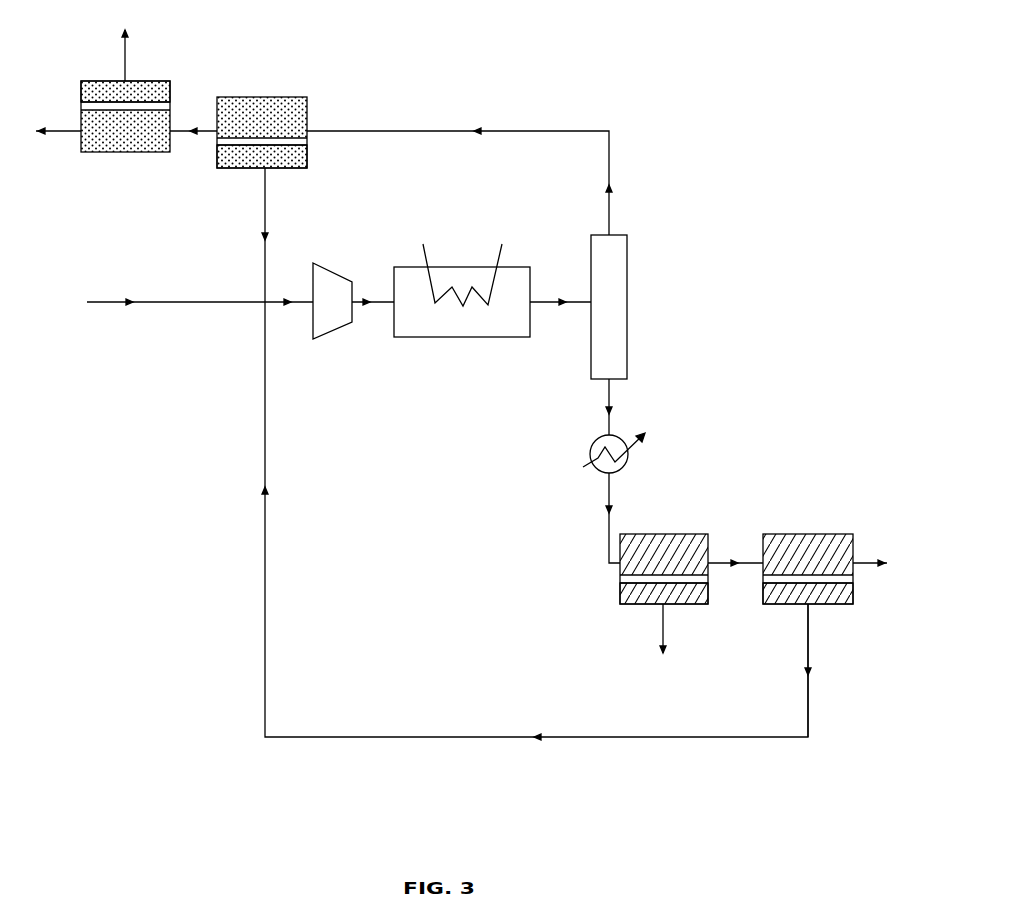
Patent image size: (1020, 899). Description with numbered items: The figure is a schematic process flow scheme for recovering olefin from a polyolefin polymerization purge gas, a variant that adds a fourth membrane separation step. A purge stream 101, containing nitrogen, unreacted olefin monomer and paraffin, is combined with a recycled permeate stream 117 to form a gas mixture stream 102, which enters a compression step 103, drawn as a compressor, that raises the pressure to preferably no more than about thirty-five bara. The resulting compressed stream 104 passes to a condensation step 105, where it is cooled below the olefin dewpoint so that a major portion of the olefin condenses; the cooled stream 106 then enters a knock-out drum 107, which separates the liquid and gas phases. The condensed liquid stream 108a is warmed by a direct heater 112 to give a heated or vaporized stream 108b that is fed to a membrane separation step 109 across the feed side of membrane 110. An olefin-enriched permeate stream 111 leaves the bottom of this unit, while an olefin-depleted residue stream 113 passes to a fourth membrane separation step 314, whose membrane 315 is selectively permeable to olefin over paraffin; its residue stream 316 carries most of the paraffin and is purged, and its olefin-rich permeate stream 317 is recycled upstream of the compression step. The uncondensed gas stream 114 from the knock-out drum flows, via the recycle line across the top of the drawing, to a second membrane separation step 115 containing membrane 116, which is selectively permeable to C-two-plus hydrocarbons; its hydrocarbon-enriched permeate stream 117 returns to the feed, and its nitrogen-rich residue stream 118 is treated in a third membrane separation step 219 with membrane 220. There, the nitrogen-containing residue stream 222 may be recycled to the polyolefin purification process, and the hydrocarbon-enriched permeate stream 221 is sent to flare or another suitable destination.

The purge stream 101 is at (176, 314).
The gas mixture stream 102 is at (289, 314).
The compression step 103 is at (328, 330).
The compressed stream 104 is at (373, 314).
The condensation step 105 is at (434, 337).
The cooled stream 106 is at (560, 314).
The knock-out drum 107 is at (627, 312).
The liquid stream 108a is at (587, 407).
The heated liquid stream 108b is at (591, 518).
The membrane separation step 109 is at (680, 534).
The membrane 110 is at (620, 578).
The permeate stream 111 is at (665, 644).
The direct heater 112 is at (592, 455).
The residue stream 113 is at (735, 554).
The uncondensed gas stream 114 is at (476, 181).
The second membrane separation step 115 is at (275, 97).
The membrane 116 is at (307, 142).
The permeate stream 117 is at (517, 454).
The residue stream 118 is at (193, 141).
The third membrane separation step 219 is at (118, 152).
The membrane 220 is at (171, 106).
The permeate stream 221 is at (123, 43).
The residue stream 222 is at (55, 142).
The fourth membrane separation step 314 is at (828, 534).
The membrane 315 is at (763, 578).
The residue stream 316 is at (871, 554).
The permeate stream 317 is at (791, 670).